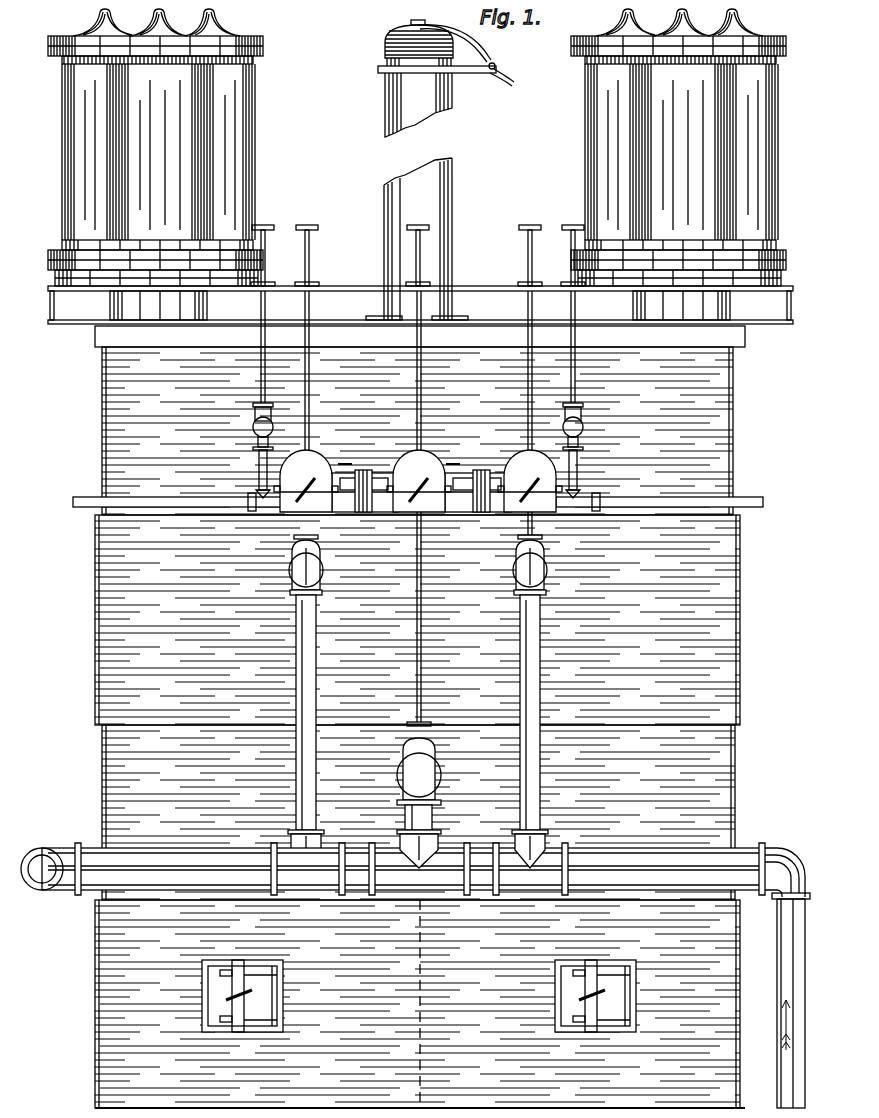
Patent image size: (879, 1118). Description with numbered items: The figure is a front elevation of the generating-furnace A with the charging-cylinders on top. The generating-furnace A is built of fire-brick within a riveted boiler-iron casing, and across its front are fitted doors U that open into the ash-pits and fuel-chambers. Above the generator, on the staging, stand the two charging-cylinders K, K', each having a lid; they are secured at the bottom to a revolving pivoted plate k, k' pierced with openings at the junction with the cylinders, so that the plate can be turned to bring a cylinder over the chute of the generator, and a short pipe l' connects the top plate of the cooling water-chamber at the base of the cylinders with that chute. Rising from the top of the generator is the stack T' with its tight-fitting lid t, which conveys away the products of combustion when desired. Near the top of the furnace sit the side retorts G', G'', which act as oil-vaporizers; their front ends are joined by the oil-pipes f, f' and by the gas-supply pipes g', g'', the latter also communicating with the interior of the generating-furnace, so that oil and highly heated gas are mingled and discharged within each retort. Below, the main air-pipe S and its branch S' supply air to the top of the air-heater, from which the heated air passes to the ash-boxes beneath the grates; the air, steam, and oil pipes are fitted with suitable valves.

The generating-furnace A is at (416, 717).
The charging-cylinder K is at (163, 164).
The charging-cylinder K' is at (671, 164).
The revolving pivoted plate k is at (143, 258).
The revolving pivoted plate k' is at (694, 260).
The short pipe l' is at (420, 305).
The lid t is at (440, 53).
The stack T' is at (412, 196).
The oil-pipe f is at (194, 499).
The oil-pipe f' is at (669, 499).
The side retort G' is at (419, 470).
The side retort G'' is at (418, 471).
The gas-supply pipe g' is at (256, 450).
The gas-supply pipe g'' is at (587, 450).
The air-pipe S is at (415, 821).
The branch S' is at (472, 701).
The doors U is at (419, 996).